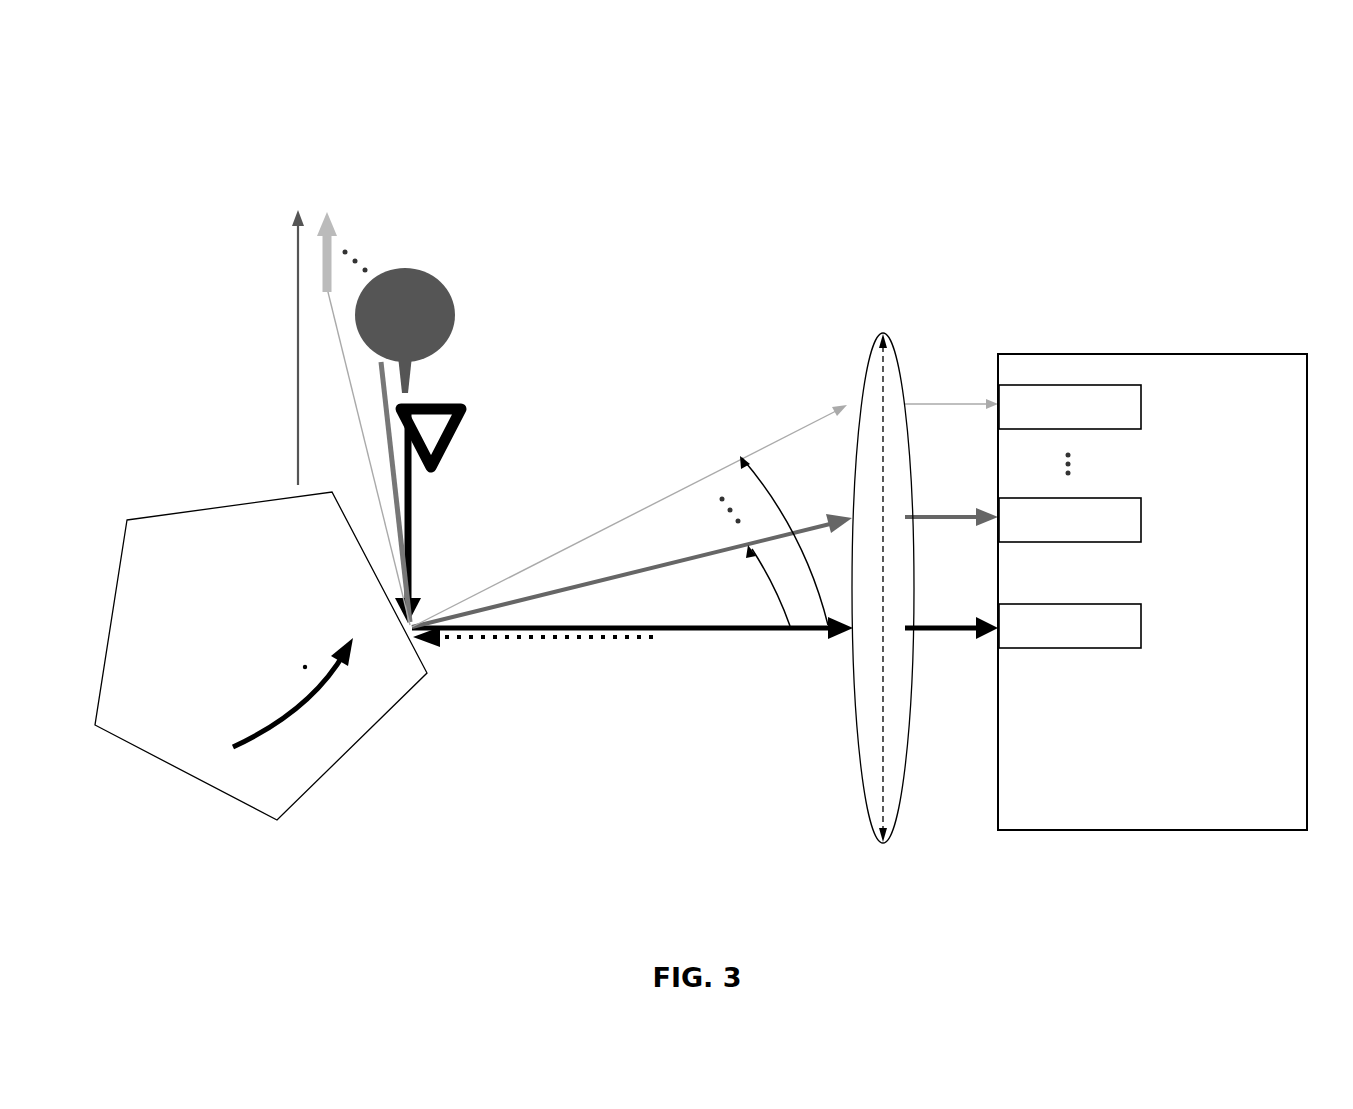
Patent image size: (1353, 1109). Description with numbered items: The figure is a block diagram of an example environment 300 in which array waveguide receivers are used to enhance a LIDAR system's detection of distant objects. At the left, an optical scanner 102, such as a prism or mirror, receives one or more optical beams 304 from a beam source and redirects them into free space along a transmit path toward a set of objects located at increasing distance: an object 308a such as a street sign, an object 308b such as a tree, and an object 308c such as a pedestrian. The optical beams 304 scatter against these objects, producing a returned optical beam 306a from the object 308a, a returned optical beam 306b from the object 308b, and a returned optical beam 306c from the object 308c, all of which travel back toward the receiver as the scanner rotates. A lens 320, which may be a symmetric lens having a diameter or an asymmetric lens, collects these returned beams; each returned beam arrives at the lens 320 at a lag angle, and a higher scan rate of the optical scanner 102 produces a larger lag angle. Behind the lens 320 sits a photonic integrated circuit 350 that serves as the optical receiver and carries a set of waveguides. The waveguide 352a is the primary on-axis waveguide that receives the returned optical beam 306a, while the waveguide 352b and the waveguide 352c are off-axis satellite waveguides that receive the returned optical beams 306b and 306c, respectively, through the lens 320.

The environment 300 is at (196, 136).
The optical scanner 102 is at (261, 656).
The optical beams 304 is at (297, 400).
The returned optical beam 306a is at (412, 560).
The returned optical beam 306b is at (386, 440).
The returned optical beam 306c is at (360, 432).
The object 308a is at (440, 403).
The object 308b is at (406, 268).
The object 308c is at (330, 213).
The lens 320 is at (878, 336).
The photonic integrated circuit 350 is at (1152, 592).
The waveguide 352a is at (1070, 626).
The waveguide 352b is at (1070, 520).
The waveguide 352c is at (1070, 407).